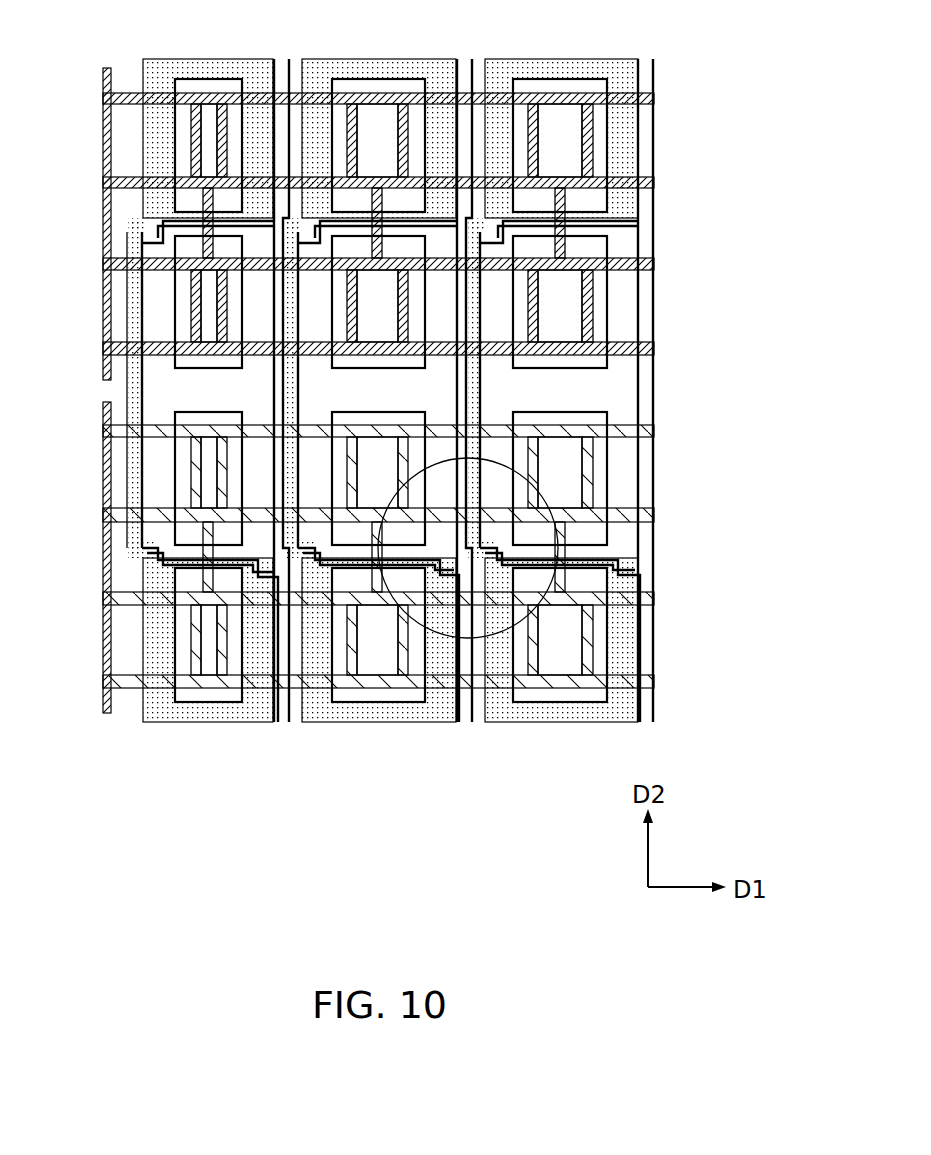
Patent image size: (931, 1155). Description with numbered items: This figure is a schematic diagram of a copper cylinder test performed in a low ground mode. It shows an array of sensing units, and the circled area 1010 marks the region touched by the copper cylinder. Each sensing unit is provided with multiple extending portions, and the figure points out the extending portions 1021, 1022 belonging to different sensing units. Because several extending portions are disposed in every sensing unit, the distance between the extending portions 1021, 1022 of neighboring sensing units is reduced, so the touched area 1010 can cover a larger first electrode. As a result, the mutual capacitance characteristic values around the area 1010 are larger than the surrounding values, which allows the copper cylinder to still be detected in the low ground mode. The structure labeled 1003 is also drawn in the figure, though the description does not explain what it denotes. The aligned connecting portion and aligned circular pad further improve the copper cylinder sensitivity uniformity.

The pixel electrode 1003 is at (502, 712).
The area 1010 is at (545, 495).
The extending portion 1021 is at (497, 517).
The extending portion 1022 is at (497, 597).